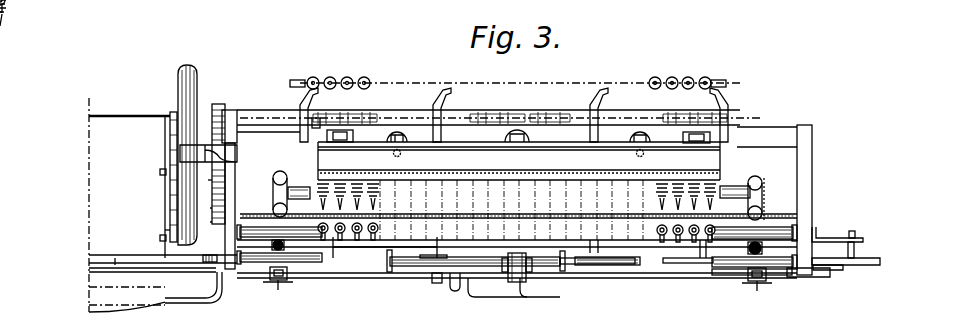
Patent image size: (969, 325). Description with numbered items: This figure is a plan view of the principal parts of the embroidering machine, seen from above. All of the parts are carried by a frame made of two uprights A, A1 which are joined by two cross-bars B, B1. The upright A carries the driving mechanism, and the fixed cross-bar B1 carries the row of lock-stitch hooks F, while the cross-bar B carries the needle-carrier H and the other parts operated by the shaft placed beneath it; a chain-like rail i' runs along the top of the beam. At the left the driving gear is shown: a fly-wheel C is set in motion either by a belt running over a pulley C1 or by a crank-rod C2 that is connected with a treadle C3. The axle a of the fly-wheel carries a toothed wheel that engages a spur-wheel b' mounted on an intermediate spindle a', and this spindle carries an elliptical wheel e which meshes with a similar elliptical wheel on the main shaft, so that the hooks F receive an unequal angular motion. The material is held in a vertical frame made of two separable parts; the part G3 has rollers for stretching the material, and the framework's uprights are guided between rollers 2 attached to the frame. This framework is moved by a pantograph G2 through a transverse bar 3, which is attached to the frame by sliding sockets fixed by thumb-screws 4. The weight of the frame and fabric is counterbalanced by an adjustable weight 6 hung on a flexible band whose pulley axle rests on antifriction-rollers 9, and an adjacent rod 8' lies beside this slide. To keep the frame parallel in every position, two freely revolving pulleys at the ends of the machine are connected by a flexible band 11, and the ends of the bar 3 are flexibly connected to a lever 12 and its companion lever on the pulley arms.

The treadle C3 is at (163, 205).
The fly-wheel C is at (197, 82).
The pulley C1 is at (165, 166).
The crank-rod C2 is at (167, 229).
The pantograph G2 is at (118, 265).
The intermediate spindle a' is at (218, 154).
The axle of the fly-wheel a is at (205, 180).
The spur-wheel b' is at (205, 207).
The elliptical wheel e is at (214, 220).
The transverse bar 3 is at (229, 110).
The upright A is at (215, 167).
The cross-bar B is at (771, 125).
The chain rail i' is at (517, 128).
The needle-carrier H is at (663, 188).
The lock-stitch hooks F is at (657, 230).
The material-frame part with rollers G3 is at (292, 194).
The fixed cross-bar B1 is at (265, 226).
The rollers 2 is at (774, 254).
The antifriction-rollers 9 is at (428, 265).
The rod 8' is at (591, 252).
The adjustable weight 6 is at (506, 290).
The flexible band 11 is at (213, 248).
The thumb-screws 4 is at (285, 283).
The lever 12 is at (779, 268).
The upright A1 is at (805, 183).